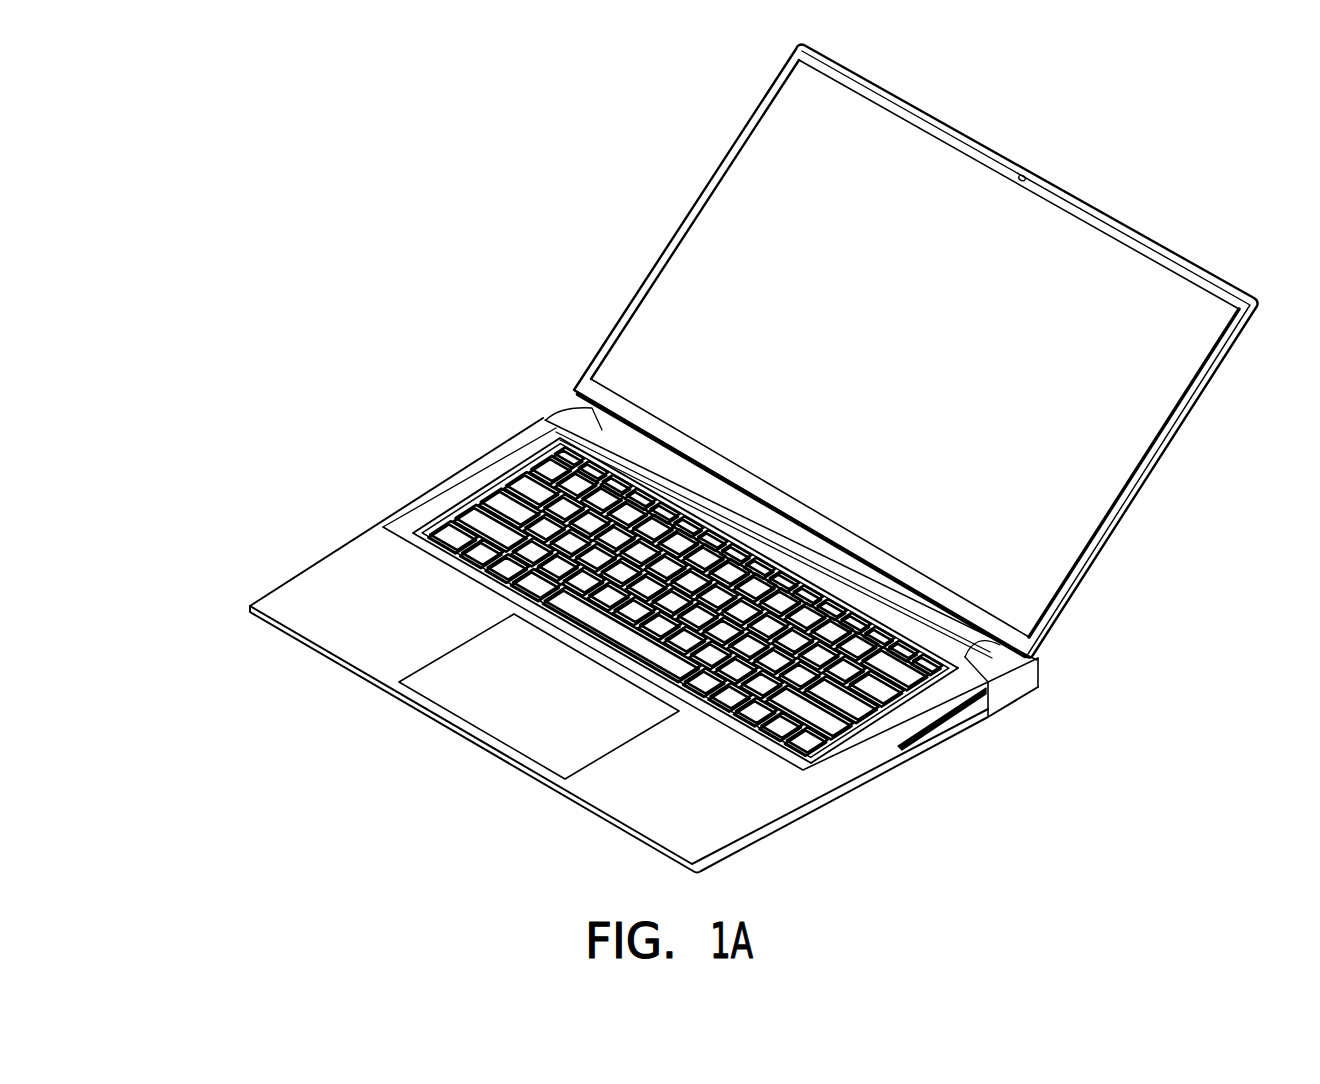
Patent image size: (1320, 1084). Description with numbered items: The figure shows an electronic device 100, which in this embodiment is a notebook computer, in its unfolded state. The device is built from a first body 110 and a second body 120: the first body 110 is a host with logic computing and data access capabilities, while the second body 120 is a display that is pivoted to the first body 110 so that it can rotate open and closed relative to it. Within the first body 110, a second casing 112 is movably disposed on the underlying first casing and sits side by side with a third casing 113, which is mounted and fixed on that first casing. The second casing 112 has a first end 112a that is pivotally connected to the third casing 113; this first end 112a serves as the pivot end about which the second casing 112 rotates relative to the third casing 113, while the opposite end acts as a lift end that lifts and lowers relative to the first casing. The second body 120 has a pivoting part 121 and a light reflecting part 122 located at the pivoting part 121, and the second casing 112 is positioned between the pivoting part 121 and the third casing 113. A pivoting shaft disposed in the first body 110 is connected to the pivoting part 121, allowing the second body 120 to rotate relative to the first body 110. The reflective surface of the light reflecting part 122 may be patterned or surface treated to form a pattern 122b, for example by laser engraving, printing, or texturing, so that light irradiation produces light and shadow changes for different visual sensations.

The electronic device 100 is at (701, 473).
The first body 110 is at (664, 653).
The second casing 112 is at (703, 668).
The first end 112a is at (740, 723).
The third casing 113 is at (322, 627).
The second body 120 is at (890, 352).
The pivoting part 121 is at (1000, 662).
The light reflecting part 122 is at (903, 600).
The pattern 122b is at (927, 633).